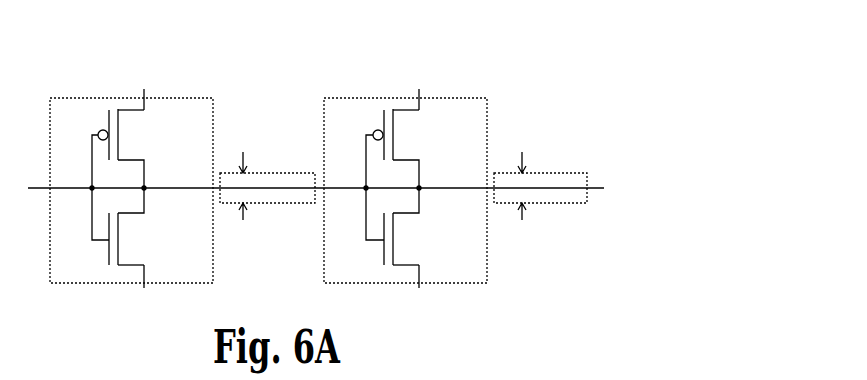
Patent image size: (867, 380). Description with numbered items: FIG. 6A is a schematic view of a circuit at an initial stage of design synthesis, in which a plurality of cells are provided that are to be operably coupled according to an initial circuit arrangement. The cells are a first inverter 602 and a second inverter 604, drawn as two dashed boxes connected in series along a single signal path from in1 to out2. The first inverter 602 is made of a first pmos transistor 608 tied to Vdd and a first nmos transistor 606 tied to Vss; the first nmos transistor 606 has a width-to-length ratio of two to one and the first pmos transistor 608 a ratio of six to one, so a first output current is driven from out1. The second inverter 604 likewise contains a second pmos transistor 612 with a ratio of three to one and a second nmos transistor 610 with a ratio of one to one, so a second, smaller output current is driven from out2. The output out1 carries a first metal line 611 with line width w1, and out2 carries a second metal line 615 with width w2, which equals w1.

The first inverter 602 is at (142, 189).
The second inverter 604 is at (418, 189).
The first nmos transistor 606 is at (152, 224).
The first pmos transistor 608 is at (152, 124).
The second nmos transistor 610 is at (427, 224).
The second pmos transistor 612 is at (427, 124).
The first metal line 611 is at (268, 168).
The second metal line 615 is at (552, 173).